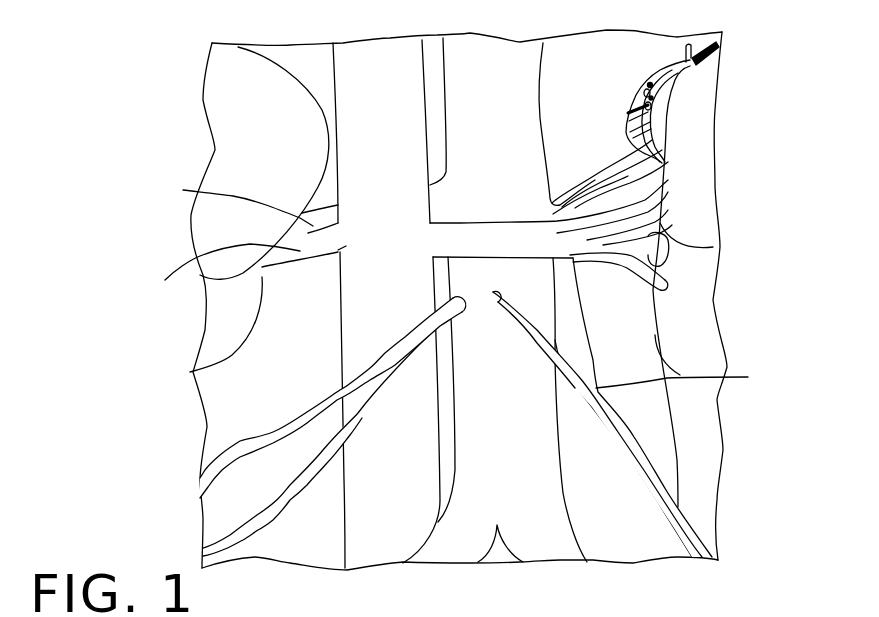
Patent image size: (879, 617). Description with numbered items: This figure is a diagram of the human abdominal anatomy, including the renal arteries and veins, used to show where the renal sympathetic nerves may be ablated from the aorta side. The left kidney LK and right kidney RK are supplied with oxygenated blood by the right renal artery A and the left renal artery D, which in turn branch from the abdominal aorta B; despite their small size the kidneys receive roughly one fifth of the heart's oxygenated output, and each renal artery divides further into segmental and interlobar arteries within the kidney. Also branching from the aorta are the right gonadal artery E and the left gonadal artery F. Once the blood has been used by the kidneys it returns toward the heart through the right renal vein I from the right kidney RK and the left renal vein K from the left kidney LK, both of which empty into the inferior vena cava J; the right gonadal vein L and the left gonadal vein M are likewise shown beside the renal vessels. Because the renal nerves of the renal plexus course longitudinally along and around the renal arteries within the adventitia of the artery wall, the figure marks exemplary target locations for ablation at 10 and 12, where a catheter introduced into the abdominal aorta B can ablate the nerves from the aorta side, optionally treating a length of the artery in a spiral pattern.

The right kidney RK is at (257, 127).
The left kidney LK is at (683, 313).
The right renal artery A is at (251, 206).
The right renal vein I is at (245, 271).
The inferior vena cava J is at (370, 67).
The abdominal aorta B is at (467, 88).
The left renal artery D is at (625, 150).
The left renal vein K is at (667, 200).
The left gonadal vein M is at (685, 379).
The left gonadal artery F is at (643, 475).
The right gonadal vein L is at (230, 453).
The right gonadal artery E is at (270, 513).
The target site 10 is at (452, 196).
The access site 12 is at (522, 196).